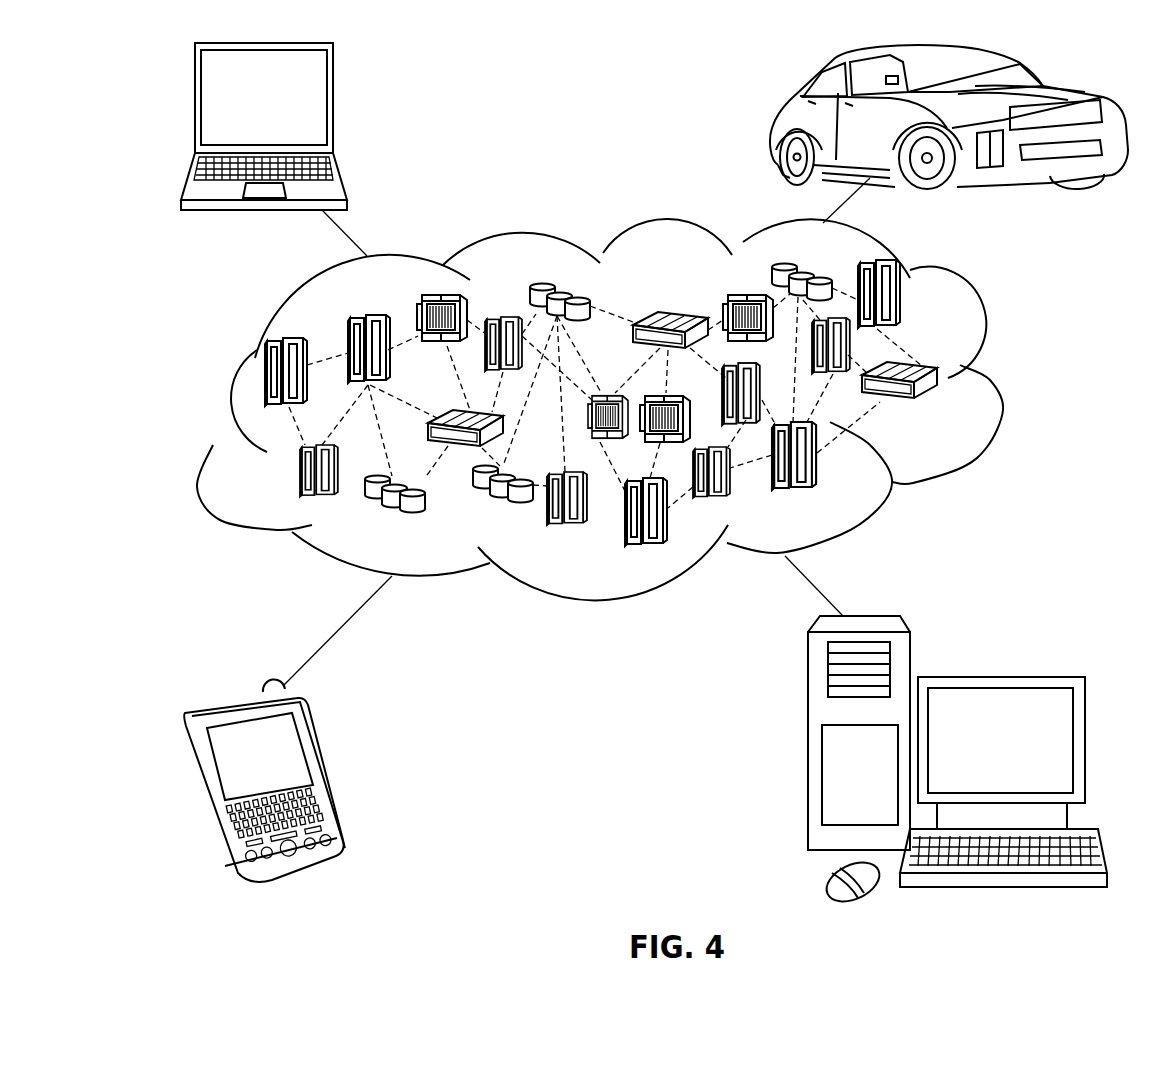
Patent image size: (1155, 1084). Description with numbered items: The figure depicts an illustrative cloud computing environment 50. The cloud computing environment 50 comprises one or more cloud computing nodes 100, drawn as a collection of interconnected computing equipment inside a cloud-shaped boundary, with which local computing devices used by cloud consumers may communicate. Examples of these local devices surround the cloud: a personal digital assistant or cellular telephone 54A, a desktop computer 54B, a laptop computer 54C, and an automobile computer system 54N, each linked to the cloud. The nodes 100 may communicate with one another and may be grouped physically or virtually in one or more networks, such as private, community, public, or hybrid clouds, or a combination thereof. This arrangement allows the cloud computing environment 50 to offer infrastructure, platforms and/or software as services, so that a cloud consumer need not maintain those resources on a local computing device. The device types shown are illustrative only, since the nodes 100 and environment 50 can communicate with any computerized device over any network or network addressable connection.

The cloud computing environment 50 is at (1005, 383).
The cloud computing nodes 100 is at (945, 415).
The personal digital assistant or cellular telephone 54A is at (326, 770).
The desktop computer 54B is at (1000, 677).
The laptop computer 54C is at (334, 106).
The automobile computer system 54N is at (776, 122).